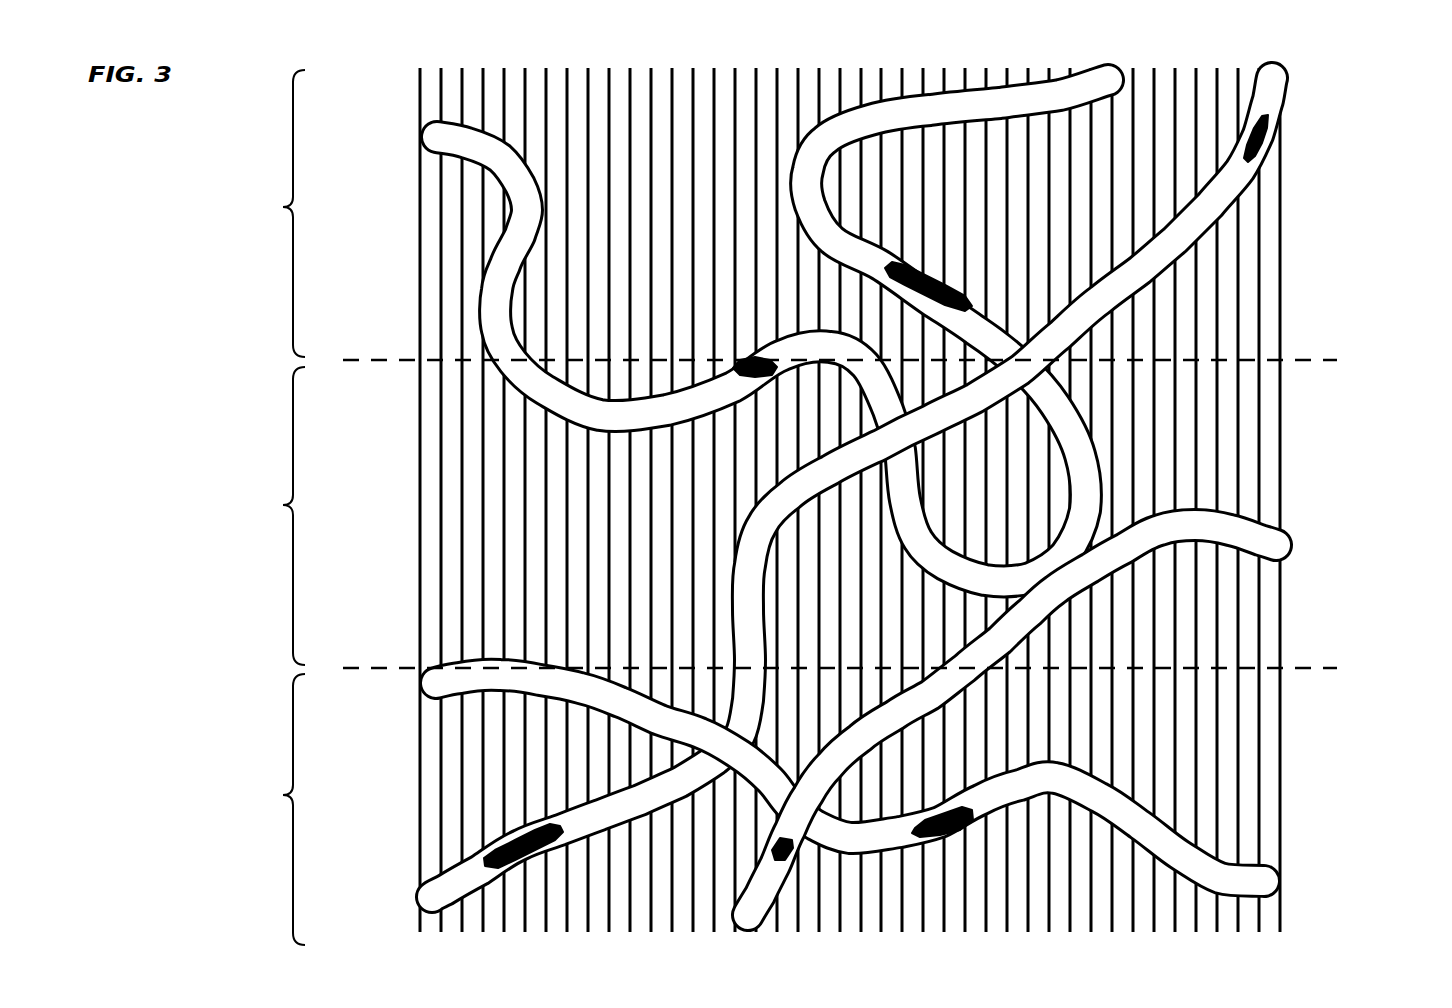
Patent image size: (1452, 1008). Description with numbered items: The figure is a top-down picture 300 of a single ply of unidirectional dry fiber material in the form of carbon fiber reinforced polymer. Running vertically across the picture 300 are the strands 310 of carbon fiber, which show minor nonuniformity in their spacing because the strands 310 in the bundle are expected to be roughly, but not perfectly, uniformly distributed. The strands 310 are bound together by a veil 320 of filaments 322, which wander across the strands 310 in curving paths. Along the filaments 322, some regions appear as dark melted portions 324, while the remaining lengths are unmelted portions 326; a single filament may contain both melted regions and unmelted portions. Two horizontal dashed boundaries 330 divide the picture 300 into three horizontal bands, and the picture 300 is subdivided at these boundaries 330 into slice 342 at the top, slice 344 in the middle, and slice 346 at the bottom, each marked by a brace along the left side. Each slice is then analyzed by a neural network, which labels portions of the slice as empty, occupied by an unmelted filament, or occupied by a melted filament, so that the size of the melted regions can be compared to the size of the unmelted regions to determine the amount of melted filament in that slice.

The picture 300 is at (1375, 183).
The strands of carbon fiber 310 is at (1283, 291).
The veil 320 is at (1288, 538).
The filaments 322 is at (1065, 88).
The melted portions 324 is at (537, 872).
The unmelted portions 326 is at (895, 112).
The boundaries 330 is at (383, 358).
The slice 342 is at (276, 213).
The slice 344 is at (276, 516).
The slice 346 is at (276, 809).